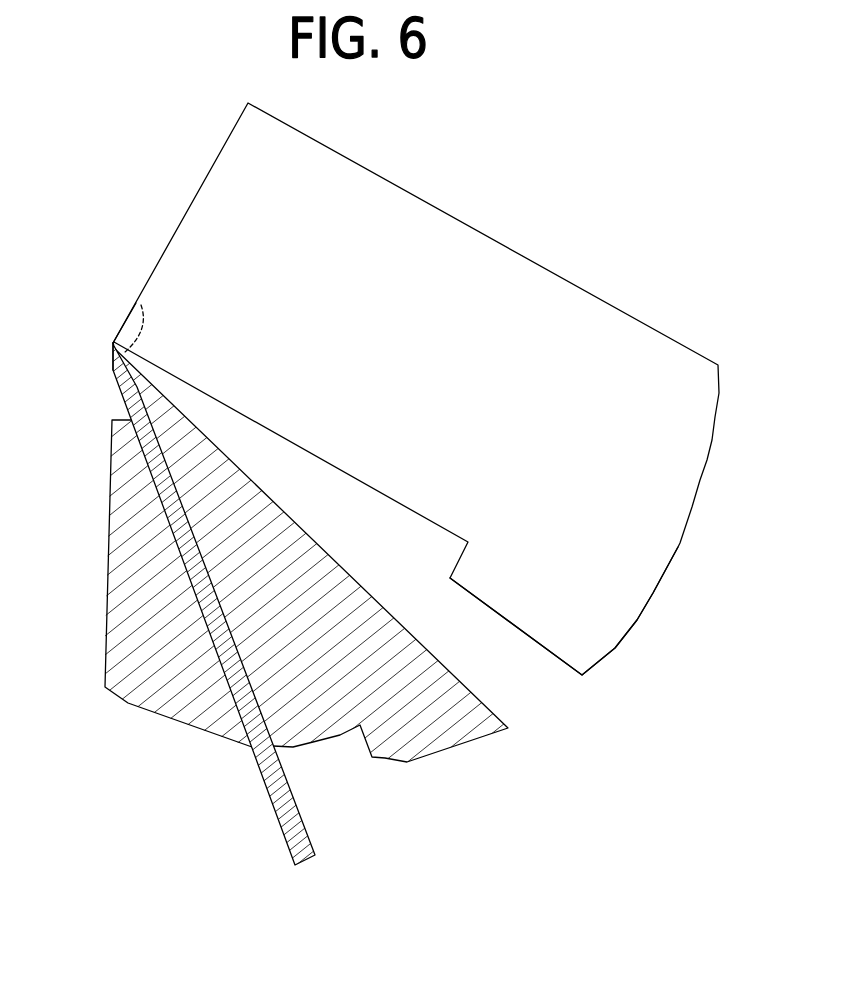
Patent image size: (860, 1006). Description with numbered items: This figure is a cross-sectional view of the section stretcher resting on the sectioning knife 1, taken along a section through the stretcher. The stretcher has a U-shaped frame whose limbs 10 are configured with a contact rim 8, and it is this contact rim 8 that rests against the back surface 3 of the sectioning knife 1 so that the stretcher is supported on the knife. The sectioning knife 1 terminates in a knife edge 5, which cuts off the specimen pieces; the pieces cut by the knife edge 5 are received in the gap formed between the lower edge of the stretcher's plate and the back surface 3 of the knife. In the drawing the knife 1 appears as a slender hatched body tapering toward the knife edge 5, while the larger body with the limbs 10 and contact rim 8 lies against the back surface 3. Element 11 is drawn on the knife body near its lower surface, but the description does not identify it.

The sectioning knife 1 is at (122, 392).
The back surface 3 is at (112, 351).
The knife edge 5 is at (112, 343).
The contact rim 8 is at (141, 303).
The limbs 10 is at (680, 402).
The lower surface of sample body 11 is at (573, 623).